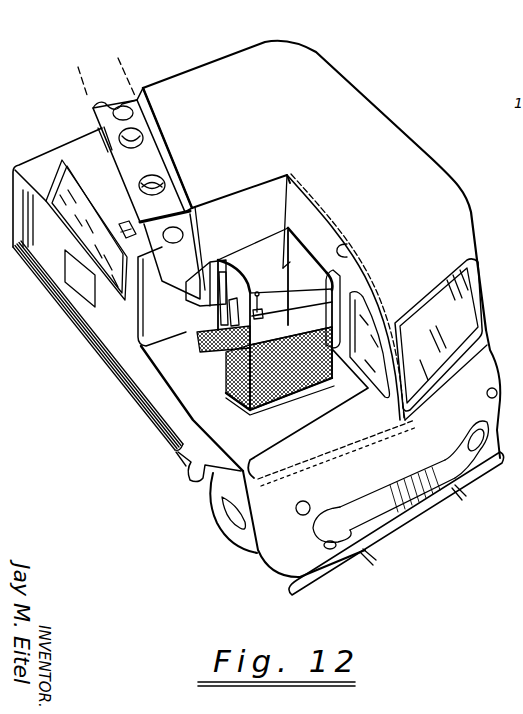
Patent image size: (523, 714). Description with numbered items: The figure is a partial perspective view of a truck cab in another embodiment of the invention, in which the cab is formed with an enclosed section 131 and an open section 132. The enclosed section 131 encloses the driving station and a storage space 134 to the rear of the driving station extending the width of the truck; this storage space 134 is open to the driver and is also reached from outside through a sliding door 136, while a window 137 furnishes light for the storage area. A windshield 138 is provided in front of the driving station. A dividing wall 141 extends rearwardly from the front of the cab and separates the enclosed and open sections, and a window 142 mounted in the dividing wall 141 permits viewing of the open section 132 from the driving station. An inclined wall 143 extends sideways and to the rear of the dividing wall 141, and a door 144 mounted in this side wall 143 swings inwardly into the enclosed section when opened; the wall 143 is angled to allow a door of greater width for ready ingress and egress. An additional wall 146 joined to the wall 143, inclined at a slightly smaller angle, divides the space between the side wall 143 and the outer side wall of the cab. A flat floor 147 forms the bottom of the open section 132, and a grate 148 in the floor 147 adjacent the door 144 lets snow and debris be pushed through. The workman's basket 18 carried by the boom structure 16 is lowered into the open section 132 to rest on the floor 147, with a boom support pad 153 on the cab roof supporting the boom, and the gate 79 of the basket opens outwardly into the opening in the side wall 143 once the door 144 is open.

The boom structure 16 is at (100, 151).
The workman's basket 18 is at (269, 340).
The gate 79 is at (263, 262).
The enclosed section 131 is at (416, 172).
The open section 132 is at (170, 400).
The storage space 134 is at (65, 252).
The sliding door 136 is at (85, 312).
The window 137 is at (67, 235).
The windshield 138 is at (447, 322).
The dividing wall 141 is at (345, 246).
The window 142 is at (348, 279).
The inclined wall 143 is at (242, 192).
The door 144 is at (277, 216).
The additional wall 146 is at (158, 313).
The floor 147 is at (230, 415).
The grate 148 is at (200, 353).
The boom support pad 153 is at (126, 223).